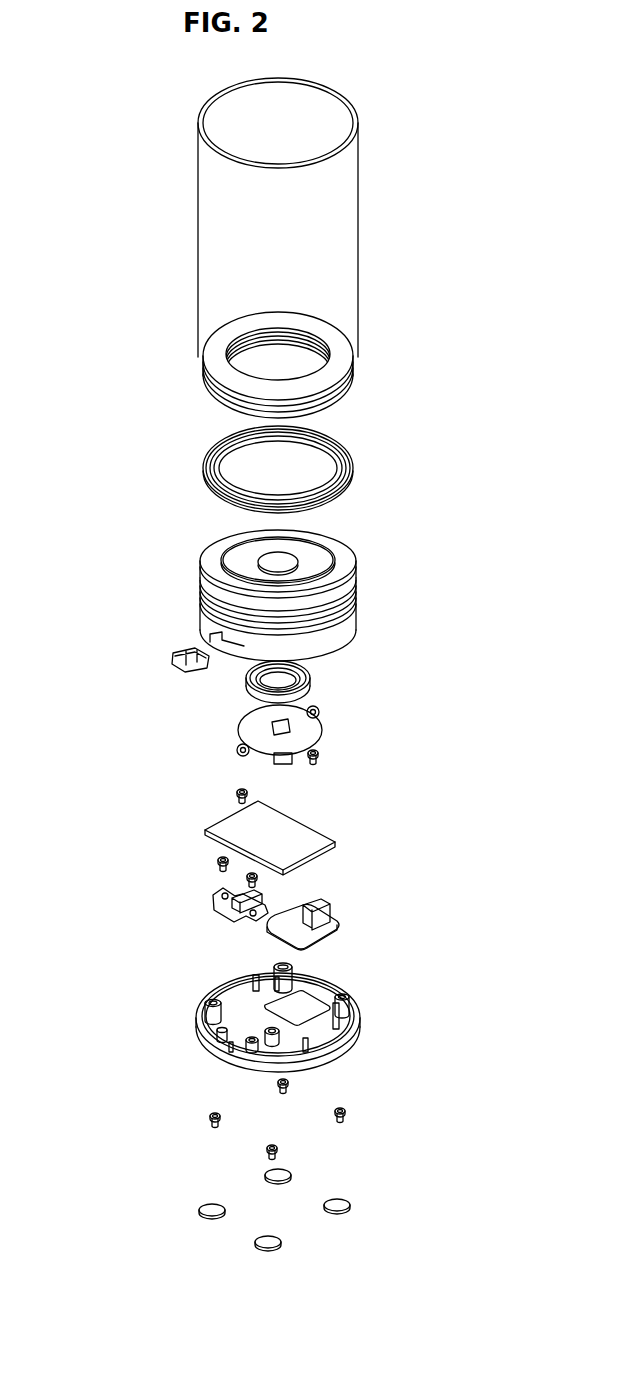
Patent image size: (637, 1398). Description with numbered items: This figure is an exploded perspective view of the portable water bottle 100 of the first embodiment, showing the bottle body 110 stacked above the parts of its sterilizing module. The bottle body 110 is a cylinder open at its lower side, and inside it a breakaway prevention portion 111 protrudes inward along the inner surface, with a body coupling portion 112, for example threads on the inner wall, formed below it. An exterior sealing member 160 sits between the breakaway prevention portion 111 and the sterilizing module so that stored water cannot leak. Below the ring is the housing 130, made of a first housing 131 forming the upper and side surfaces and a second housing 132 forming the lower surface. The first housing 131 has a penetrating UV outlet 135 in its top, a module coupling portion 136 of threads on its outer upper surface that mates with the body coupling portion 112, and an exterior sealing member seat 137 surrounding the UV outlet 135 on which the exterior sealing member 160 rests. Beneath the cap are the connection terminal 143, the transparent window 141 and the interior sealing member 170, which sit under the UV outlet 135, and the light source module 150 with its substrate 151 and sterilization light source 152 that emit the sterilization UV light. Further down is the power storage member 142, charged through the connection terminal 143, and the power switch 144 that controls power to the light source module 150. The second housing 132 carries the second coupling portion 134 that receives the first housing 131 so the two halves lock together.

The portable water bottle 100 is at (98, 86).
The bottle body 110 is at (355, 183).
The breakaway prevention portion 111 is at (335, 336).
The body coupling portion 112 is at (352, 379).
The exterior sealing member 160 is at (352, 462).
The housing 130 is at (307, 587).
The first housing 131 is at (340, 573).
The second housing 132 is at (355, 624).
The UV outlet 135 is at (290, 562).
The module coupling portion 136 is at (200, 589).
The exterior sealing member seat 137 is at (218, 552).
The connection terminal 143 is at (172, 653).
The transparent window 141 is at (308, 677).
The interior sealing member 170 is at (247, 689).
The light source module 150 is at (350, 734).
The substrate 151 is at (305, 742).
The sterilization light source 152 is at (288, 725).
The power storage member 142 is at (340, 800).
The power switch 144 is at (305, 1000).
The second coupling portion 134 is at (345, 1012).